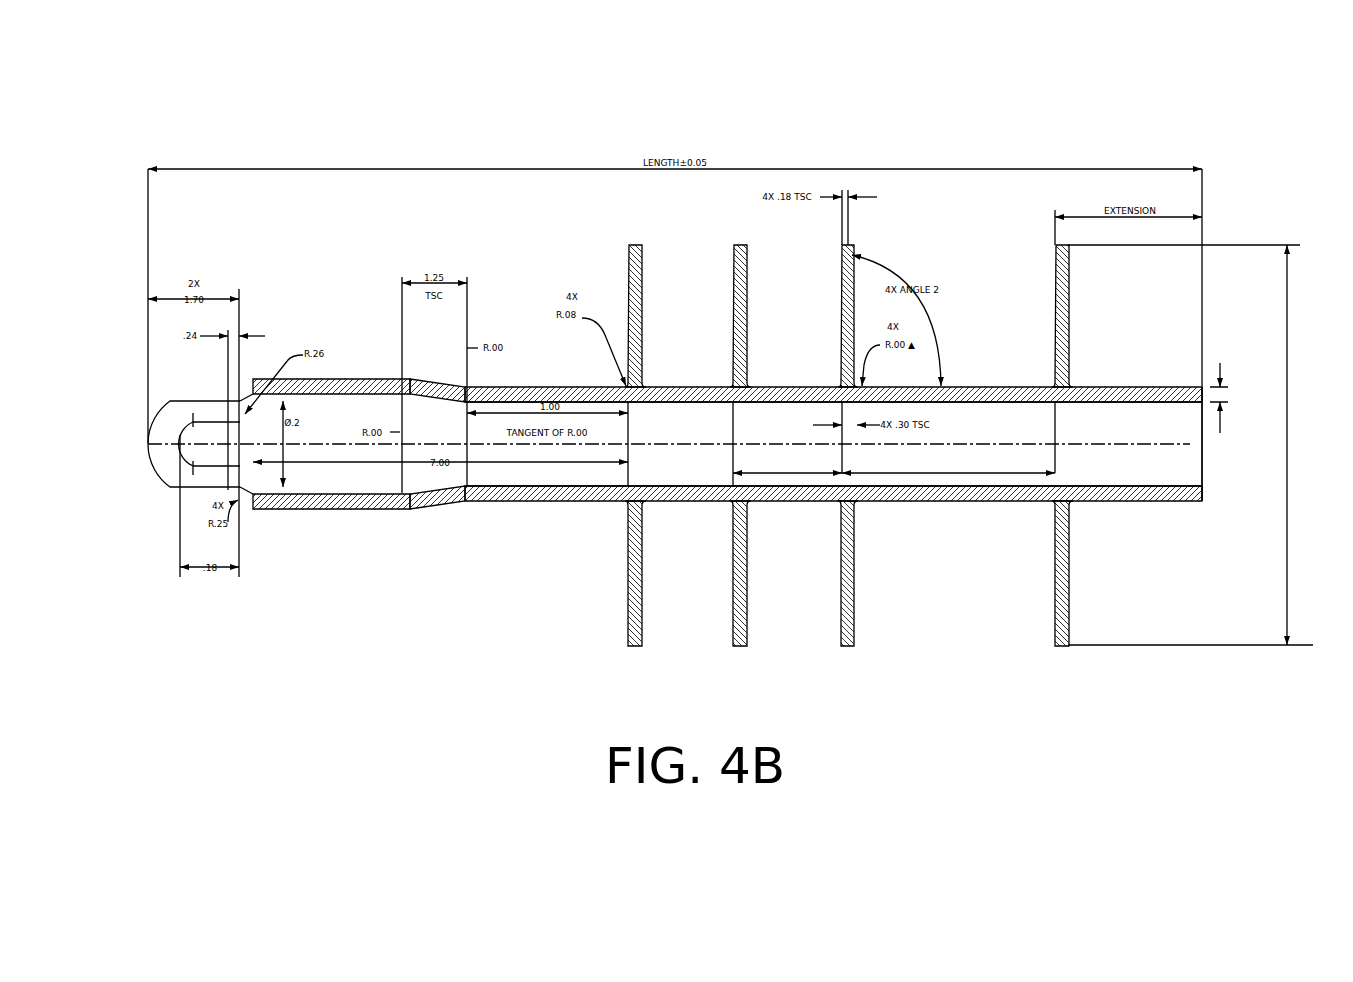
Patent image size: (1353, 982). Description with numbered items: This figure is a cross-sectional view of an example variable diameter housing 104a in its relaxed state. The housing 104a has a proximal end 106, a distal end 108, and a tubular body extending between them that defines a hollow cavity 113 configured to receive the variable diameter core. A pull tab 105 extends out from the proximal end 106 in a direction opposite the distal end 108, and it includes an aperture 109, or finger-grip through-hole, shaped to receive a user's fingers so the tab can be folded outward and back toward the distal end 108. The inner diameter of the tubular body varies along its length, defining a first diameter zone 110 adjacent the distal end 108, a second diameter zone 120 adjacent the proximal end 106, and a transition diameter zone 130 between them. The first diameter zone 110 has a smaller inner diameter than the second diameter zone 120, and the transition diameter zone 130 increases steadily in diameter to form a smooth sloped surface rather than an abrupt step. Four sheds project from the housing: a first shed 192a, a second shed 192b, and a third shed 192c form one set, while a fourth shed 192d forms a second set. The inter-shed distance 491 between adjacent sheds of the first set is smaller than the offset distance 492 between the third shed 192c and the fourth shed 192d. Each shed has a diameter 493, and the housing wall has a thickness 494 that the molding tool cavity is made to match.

The variable diameter housing 104a is at (231, 628).
The pull tab 105 is at (157, 477).
The proximal end 106 is at (226, 443).
The distal end 108 is at (1200, 500).
The aperture 109 is at (203, 437).
The first diameter zone 110 is at (975, 503).
The hollow cavity 113 is at (683, 463).
The second diameter zone 120 is at (323, 510).
The transition diameter zone 130 is at (433, 508).
The first shed 192a is at (632, 250).
The second shed 192b is at (742, 248).
The third shed 192c is at (850, 287).
The fourth shed 192d is at (1057, 275).
The inter-shed distance 491 is at (786, 473).
The offset distance 492 is at (900, 473).
The diameter 493 is at (1290, 450).
The thickness 494 is at (1226, 399).